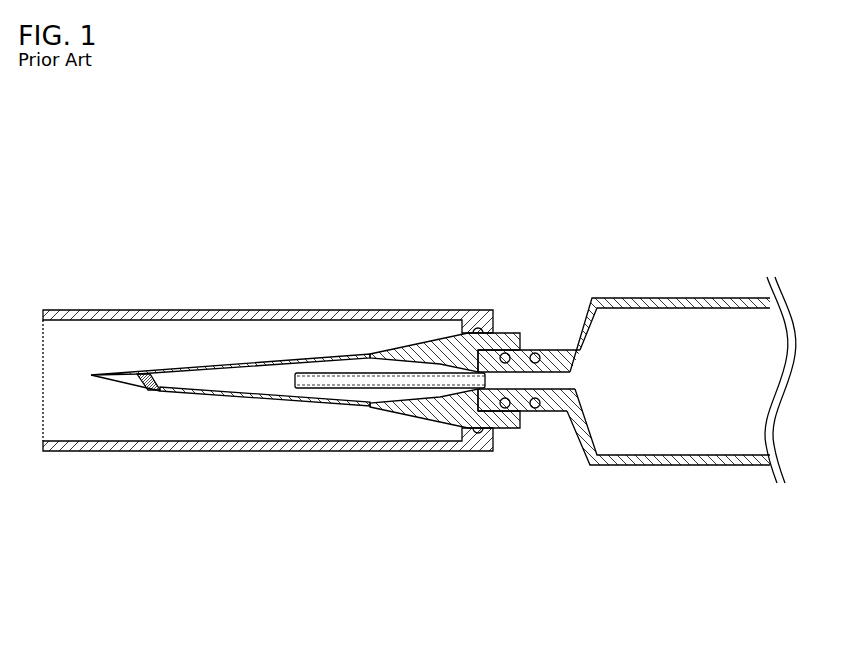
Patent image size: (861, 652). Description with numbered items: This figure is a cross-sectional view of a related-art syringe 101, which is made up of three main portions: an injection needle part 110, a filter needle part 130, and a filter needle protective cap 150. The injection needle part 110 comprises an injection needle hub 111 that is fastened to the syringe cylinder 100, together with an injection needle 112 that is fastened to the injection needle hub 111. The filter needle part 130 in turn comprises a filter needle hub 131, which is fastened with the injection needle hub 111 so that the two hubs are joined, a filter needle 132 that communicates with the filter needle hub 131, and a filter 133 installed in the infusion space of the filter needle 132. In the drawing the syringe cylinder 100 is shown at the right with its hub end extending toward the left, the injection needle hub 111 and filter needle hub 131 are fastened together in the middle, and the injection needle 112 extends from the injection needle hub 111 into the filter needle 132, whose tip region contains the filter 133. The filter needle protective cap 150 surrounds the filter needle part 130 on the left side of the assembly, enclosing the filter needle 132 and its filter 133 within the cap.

The syringe cylinder 100 is at (702, 297).
The syringe 101 is at (551, 321).
The injection needle part 110 is at (539, 385).
The injection needle hub 111 is at (546, 350).
The injection needle 112 is at (323, 388).
The filter needle part 130 is at (281, 416).
The filter needle hub 131 is at (512, 333).
The filter needle 132 is at (221, 322).
The filter 133 is at (142, 372).
The filter needle protective cap 150 is at (158, 452).